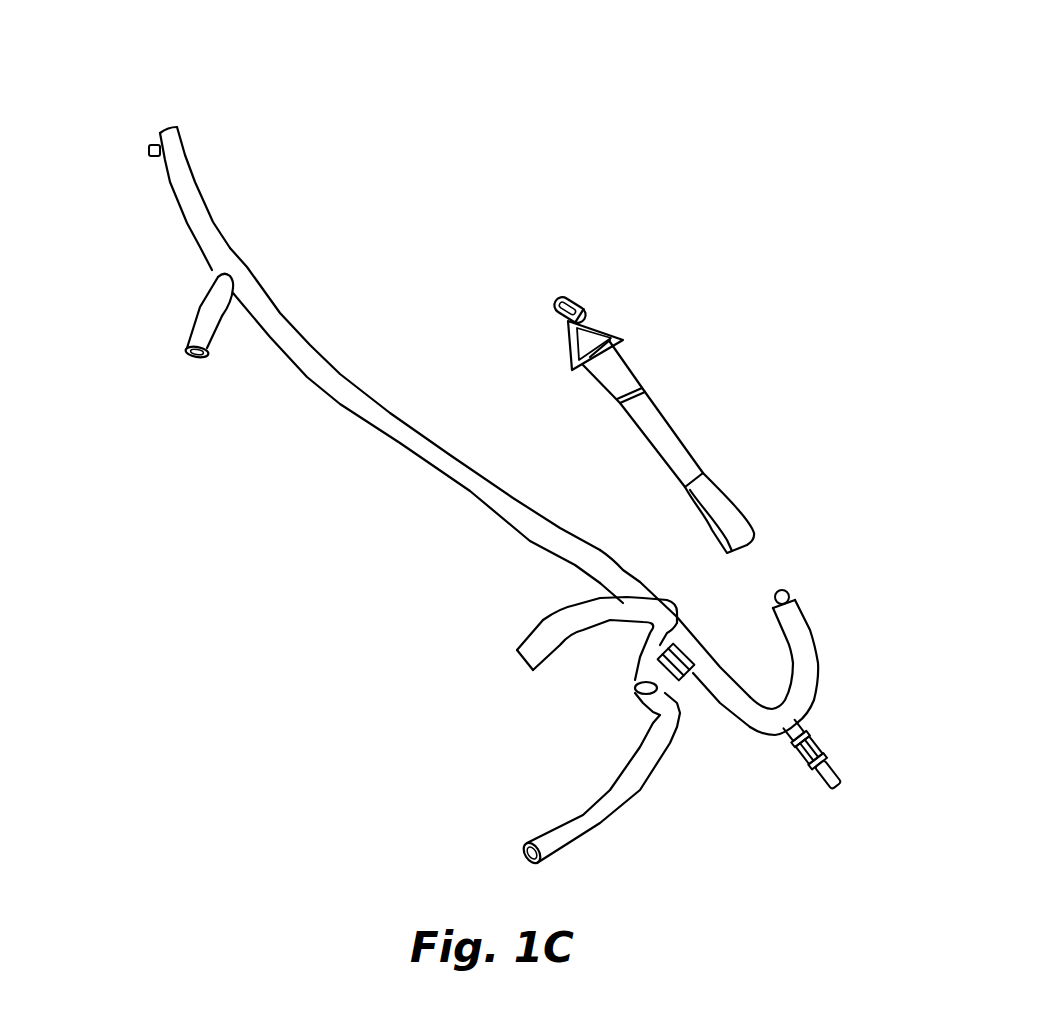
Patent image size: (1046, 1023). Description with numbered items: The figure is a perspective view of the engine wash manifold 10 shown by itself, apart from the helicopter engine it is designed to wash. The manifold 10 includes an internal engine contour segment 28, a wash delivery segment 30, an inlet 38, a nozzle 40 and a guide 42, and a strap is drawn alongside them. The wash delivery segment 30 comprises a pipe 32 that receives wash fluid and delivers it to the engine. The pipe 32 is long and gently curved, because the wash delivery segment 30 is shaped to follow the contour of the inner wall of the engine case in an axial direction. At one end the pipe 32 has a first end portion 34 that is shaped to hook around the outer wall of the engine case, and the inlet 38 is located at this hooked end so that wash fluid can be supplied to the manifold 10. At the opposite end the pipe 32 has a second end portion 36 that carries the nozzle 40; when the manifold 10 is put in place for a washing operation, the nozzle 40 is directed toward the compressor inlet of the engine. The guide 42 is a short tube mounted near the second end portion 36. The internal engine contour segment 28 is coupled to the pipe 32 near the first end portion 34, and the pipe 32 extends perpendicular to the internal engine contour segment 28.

The engine wash manifold 10 is at (429, 194).
The internal engine contour segment 28 is at (534, 614).
The wash delivery segment 30 is at (388, 413).
The pipe 32 is at (514, 500).
The first end portion 34 is at (849, 643).
The second end portion 36 is at (226, 122).
The inlet 38 is at (845, 790).
The nozzle 40 is at (147, 152).
The guide 42 is at (201, 315).